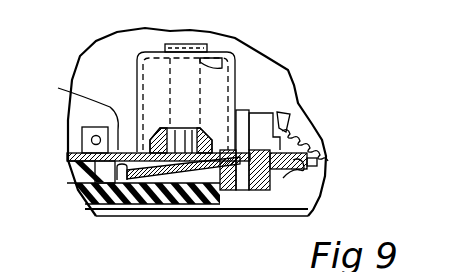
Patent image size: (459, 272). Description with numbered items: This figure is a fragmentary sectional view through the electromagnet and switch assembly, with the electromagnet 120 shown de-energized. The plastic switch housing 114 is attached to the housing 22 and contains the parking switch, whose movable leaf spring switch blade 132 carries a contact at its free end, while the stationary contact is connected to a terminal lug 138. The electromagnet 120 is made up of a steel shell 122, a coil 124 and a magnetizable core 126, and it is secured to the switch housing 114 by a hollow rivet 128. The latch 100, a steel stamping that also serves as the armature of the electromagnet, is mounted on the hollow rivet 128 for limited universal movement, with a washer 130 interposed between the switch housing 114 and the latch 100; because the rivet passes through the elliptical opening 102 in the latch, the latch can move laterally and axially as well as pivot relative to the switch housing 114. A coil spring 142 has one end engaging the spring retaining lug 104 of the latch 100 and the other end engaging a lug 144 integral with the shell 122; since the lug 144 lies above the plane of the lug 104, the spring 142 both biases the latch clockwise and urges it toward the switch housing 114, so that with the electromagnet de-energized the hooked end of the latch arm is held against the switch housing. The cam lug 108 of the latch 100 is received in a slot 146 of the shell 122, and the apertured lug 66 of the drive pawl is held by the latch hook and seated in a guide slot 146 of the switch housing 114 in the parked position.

The housing 22 is at (280, 70).
The apertured lug 66 is at (161, 263).
The latch 100 is at (200, 140).
The elliptical opening 102 is at (250, 178).
The spring retaining lug 104 is at (317, 163).
The cam lug 108 is at (100, 166).
The switch housing 114 is at (97, 207).
The electromagnet 120 is at (237, 55).
The steel shell 122 is at (65, 147).
The coil 124 is at (163, 131).
The magnetizable core 126 is at (214, 57).
The hollow rivet 128 is at (258, 191).
The washer 130 is at (285, 177).
The leaf spring switch blade 132 is at (240, 163).
The terminal lug 138 is at (88, 127).
The coil spring 142 is at (305, 140).
The lug 144 is at (282, 118).
The slot 146 is at (71, 111).